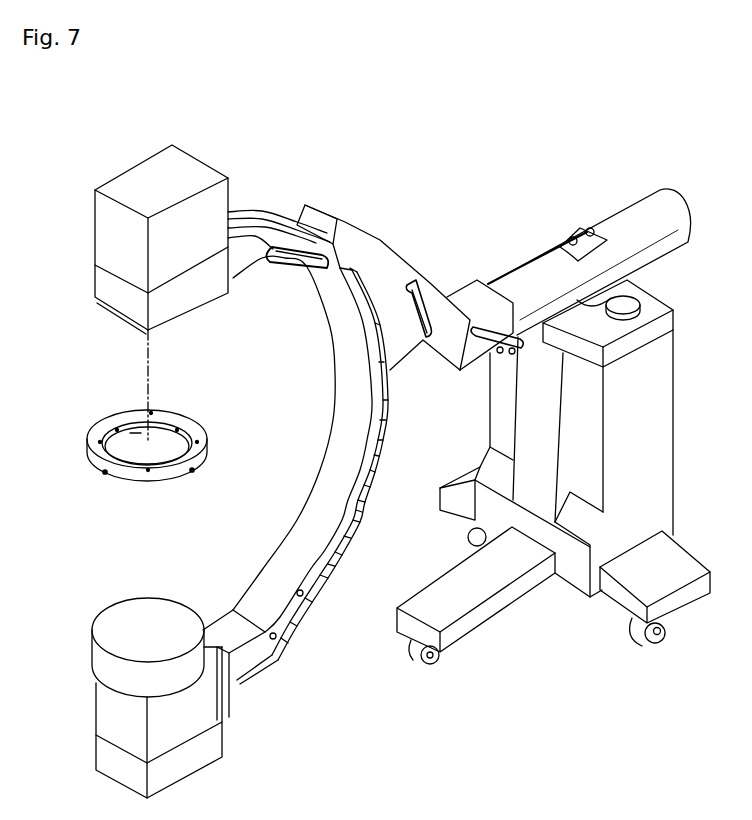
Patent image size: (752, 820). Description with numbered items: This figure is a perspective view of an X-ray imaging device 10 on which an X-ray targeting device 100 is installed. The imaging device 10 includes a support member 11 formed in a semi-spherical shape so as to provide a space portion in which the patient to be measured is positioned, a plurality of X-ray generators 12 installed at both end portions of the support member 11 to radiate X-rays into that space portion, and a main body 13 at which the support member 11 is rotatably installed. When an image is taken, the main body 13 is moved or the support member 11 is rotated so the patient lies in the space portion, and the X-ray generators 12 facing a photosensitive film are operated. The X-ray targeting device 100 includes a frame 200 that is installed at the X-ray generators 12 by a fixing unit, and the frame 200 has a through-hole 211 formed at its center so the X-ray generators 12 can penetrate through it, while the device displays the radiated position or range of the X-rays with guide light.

The X-ray imaging device 10 is at (446, 160).
The support member 11 is at (345, 267).
The X-ray generators 12 is at (150, 170).
The main body 13 is at (657, 390).
The X-ray targeting device 100 is at (88, 415).
The frame 200 is at (175, 418).
The through-hole 211 is at (135, 432).